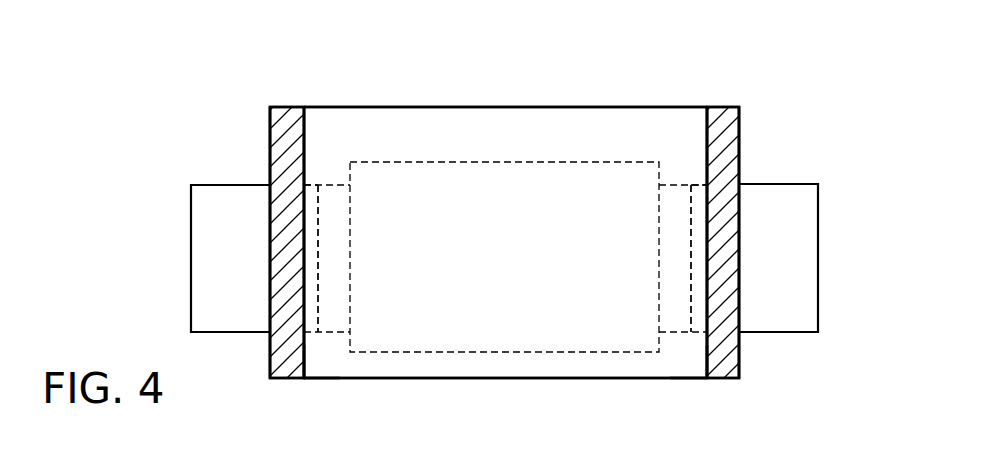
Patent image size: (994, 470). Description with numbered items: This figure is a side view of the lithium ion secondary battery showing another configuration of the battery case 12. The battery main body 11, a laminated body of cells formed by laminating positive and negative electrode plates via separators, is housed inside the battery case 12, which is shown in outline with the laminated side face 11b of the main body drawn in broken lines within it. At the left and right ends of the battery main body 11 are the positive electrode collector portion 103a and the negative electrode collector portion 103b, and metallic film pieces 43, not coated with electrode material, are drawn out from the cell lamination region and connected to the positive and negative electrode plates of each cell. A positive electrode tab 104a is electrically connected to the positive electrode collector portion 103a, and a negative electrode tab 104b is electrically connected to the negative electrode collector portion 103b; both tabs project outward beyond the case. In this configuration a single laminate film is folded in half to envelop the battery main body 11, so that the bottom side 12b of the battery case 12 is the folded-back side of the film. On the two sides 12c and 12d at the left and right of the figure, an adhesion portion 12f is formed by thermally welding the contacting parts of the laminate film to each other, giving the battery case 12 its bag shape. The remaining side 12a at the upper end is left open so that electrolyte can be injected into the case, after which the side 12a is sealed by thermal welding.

The battery case 12 is at (571, 104).
The remaining side of the battery case 12a is at (513, 107).
The bottom side of the battery case 12b is at (500, 378).
The left side of the battery case 12c is at (313, 359).
The right side of the battery case 12d is at (699, 355).
The adhesion portion 12f is at (290, 378).
The positive electrode collector portion 103a is at (309, 186).
The negative electrode collector portion 103b is at (703, 186).
The positive electrode tab 104a is at (222, 202).
The negative electrode tab 104b is at (786, 202).
The battery main body 11 is at (447, 162).
The laminated side face 11b is at (350, 257).
The metallic film piece 43 is at (335, 186).